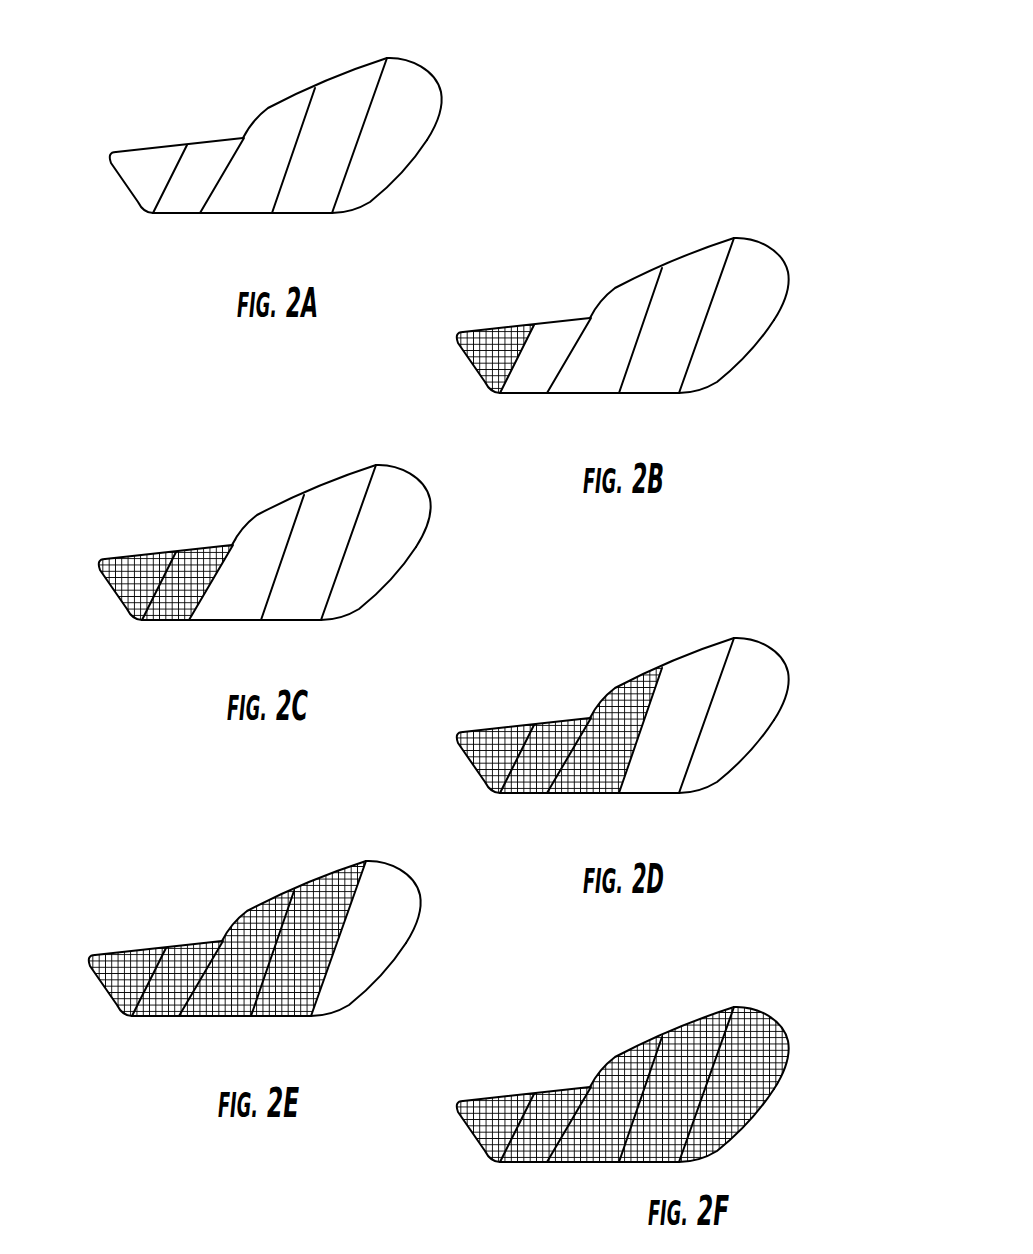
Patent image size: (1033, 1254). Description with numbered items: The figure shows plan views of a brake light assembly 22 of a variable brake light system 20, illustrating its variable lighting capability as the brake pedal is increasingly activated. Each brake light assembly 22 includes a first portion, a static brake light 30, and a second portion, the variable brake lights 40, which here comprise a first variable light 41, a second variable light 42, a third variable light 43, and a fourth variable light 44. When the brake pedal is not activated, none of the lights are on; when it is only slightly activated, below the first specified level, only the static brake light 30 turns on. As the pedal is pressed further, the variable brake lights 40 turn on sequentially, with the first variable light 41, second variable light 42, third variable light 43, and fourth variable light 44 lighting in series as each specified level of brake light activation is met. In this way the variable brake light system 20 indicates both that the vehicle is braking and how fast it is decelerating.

In FIG. 2A, the variable brake light system 20 is at (262, 143).
In FIG. 2B, the variable brake light system 20 is at (603, 323).
In FIG. 2C, the variable brake light system 20 is at (255, 550).
In FIG. 2D, the variable brake light system 20 is at (603, 723).
In FIG. 2E, the variable brake light system 20 is at (251, 946).
In FIG. 2F, the variable brake light system 20 is at (596, 1092).
In FIG. 2A, the brake light assembly 22 is at (426, 68).
In FIG. 2B, the brake light assembly 22 is at (788, 268).
In FIG. 2C, the brake light assembly 22 is at (430, 495).
In FIG. 2D, the brake light assembly 22 is at (788, 668).
In FIG. 2E, the brake light assembly 22 is at (420, 891).
In FIG. 2F, the brake light assembly 22 is at (788, 1037).
In FIG. 2A, the static brake light 30 is at (124, 187).
In FIG. 2B, the static brake light 30 is at (455, 362).
In FIG. 2C, the static brake light 30 is at (97, 589).
In FIG. 2D, the static brake light 30 is at (455, 762).
In FIG. 2E, the static brake light 30 is at (87, 985).
In FIG. 2F, the static brake light 30 is at (455, 1131).
In FIG. 2A, the variable brake lights 40 is at (284, 96).
In FIG. 2B, the variable brake lights 40 is at (662, 256).
In FIG. 2C, the variable brake lights 40 is at (304, 483).
In FIG. 2D, the variable brake lights 40 is at (662, 656).
In FIG. 2E, the variable brake lights 40 is at (294, 879).
In FIG. 2F, the variable brake lights 40 is at (662, 1025).
In FIG. 2A, the first variable light 41 is at (173, 215).
In FIG. 2B, the first variable light 41 is at (498, 378).
In FIG. 2C, the first variable light 41 is at (140, 605).
In FIG. 2D, the first variable light 41 is at (498, 778).
In FIG. 2E, the first variable light 41 is at (130, 1001).
In FIG. 2F, the first variable light 41 is at (498, 1147).
In FIG. 2A, the second variable light 42 is at (237, 216).
In FIG. 2B, the second variable light 42 is at (558, 380).
In FIG. 2C, the second variable light 42 is at (200, 607).
In FIG. 2D, the second variable light 42 is at (558, 780).
In FIG. 2E, the second variable light 42 is at (190, 1003).
In FIG. 2F, the second variable light 42 is at (558, 1149).
In FIG. 2A, the third variable light 43 is at (305, 216).
In FIG. 2B, the third variable light 43 is at (632, 359).
In FIG. 2C, the third variable light 43 is at (274, 586).
In FIG. 2D, the third variable light 43 is at (632, 759).
In FIG. 2E, the third variable light 43 is at (264, 982).
In FIG. 2F, the third variable light 43 is at (632, 1128).
In FIG. 2A, the fourth variable light 44 is at (388, 184).
In FIG. 2B, the fourth variable light 44 is at (726, 328).
In FIG. 2C, the fourth variable light 44 is at (368, 555).
In FIG. 2D, the fourth variable light 44 is at (726, 728).
In FIG. 2E, the fourth variable light 44 is at (358, 951).
In FIG. 2F, the fourth variable light 44 is at (726, 1097).